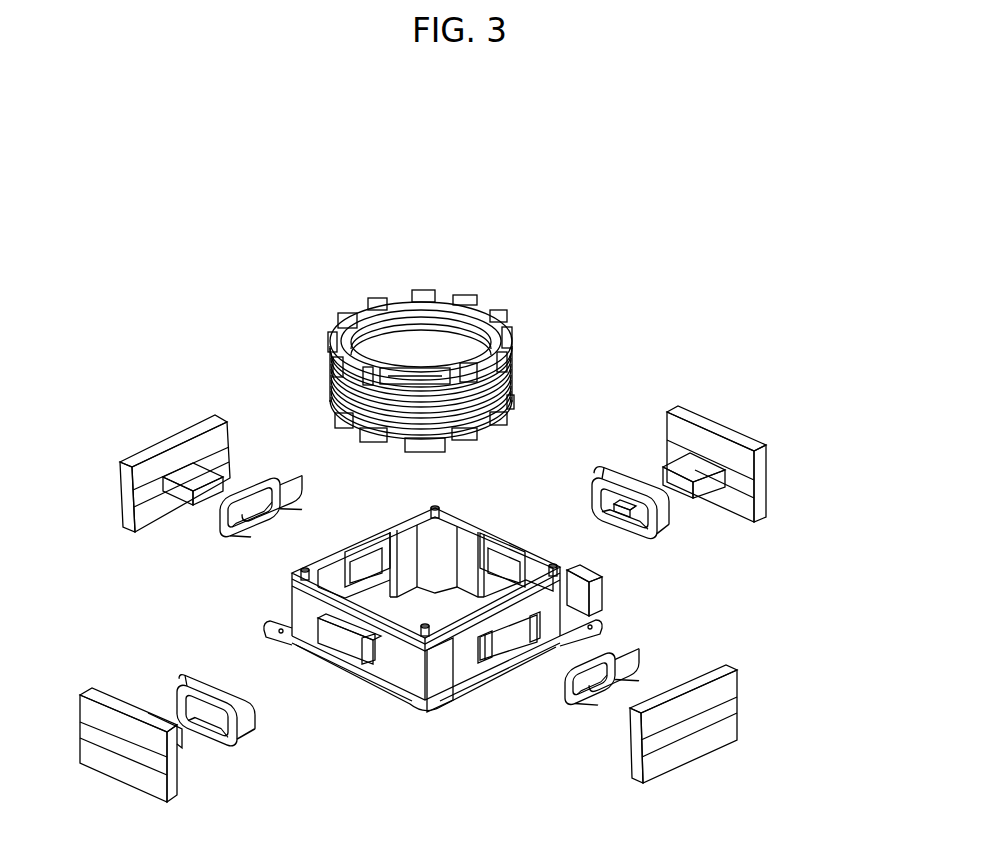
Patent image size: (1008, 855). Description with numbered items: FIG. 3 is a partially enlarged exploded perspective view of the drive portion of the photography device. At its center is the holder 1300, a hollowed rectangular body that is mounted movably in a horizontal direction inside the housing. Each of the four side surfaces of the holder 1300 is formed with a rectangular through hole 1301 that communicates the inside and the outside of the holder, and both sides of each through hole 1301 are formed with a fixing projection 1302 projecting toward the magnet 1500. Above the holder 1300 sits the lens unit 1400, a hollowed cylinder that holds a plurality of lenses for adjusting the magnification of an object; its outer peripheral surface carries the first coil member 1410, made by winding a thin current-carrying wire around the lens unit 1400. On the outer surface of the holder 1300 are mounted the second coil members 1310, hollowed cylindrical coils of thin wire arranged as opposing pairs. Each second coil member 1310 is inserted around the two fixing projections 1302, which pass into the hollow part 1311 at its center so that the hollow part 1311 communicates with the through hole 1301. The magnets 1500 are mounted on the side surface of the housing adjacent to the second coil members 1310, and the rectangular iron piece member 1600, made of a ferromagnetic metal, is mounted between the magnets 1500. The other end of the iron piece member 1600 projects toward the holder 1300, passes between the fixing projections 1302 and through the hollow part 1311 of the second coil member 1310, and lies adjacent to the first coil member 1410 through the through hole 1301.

The holder 1300 is at (395, 657).
The through hole 1301 is at (508, 640).
The fixing projection 1302 is at (477, 658).
The second coil member 1310 is at (622, 468).
The hollow part 1311 is at (630, 504).
The lens unit 1400 is at (407, 290).
The first coil member 1410 is at (515, 381).
The magnet 1500 is at (760, 508).
The iron piece member 1600 is at (683, 493).